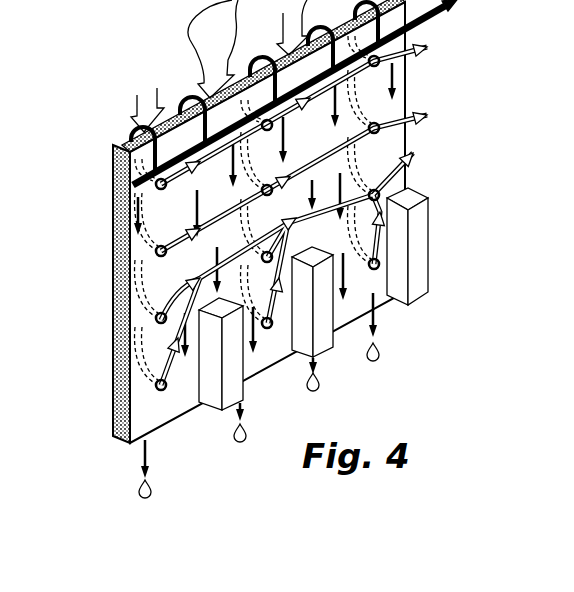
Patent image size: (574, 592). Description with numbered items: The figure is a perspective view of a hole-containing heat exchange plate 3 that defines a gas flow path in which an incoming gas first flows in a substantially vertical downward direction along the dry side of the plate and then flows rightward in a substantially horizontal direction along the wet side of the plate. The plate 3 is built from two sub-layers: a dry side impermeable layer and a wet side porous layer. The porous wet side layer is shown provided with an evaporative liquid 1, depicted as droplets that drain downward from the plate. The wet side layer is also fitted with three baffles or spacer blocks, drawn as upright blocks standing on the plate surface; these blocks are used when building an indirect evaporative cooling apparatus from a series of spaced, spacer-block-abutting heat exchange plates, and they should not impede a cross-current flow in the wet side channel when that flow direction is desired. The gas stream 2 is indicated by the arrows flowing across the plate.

The evaporative liquid 1 is at (321, 385).
The gas (air) stream 2 is at (418, 122).
The hole-containing heat exchange plate 3 is at (112, 150).